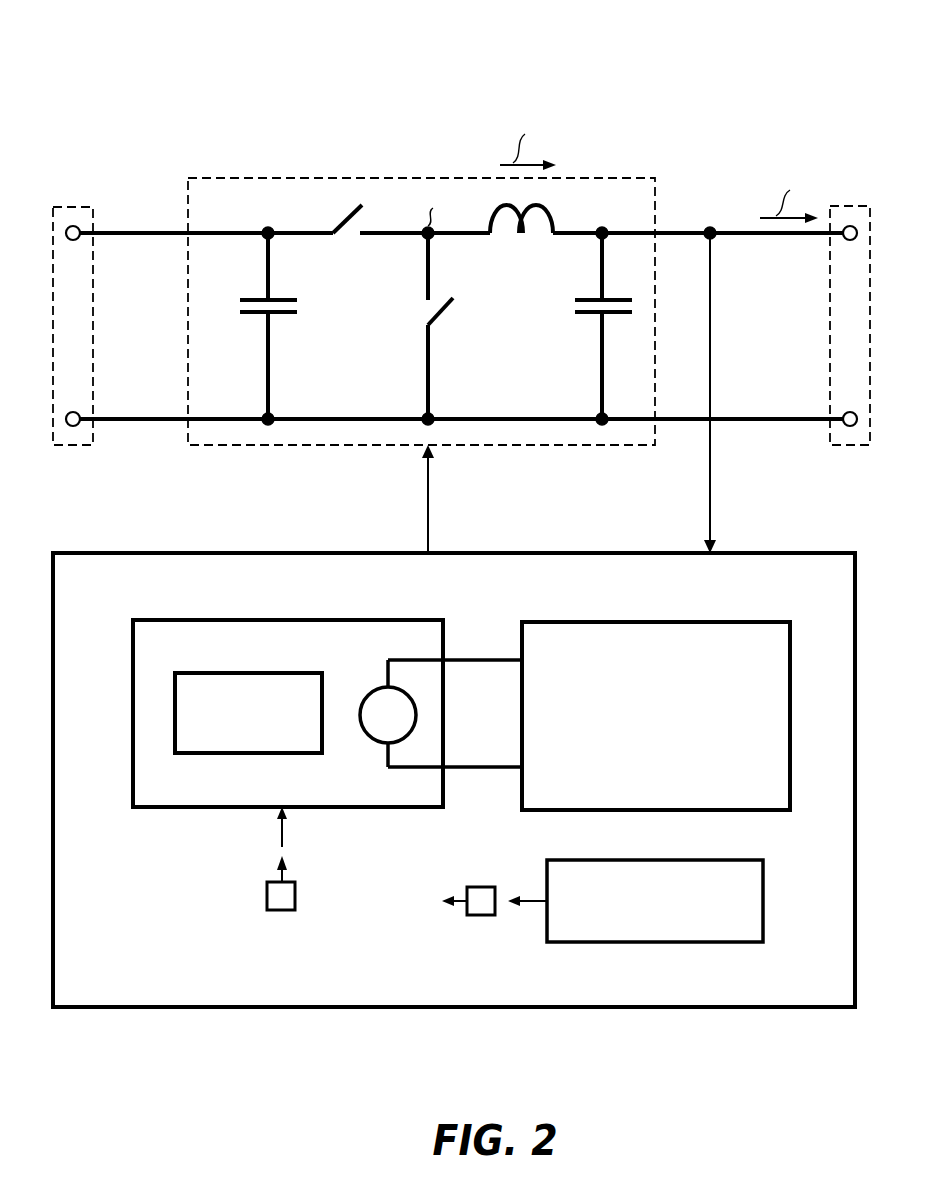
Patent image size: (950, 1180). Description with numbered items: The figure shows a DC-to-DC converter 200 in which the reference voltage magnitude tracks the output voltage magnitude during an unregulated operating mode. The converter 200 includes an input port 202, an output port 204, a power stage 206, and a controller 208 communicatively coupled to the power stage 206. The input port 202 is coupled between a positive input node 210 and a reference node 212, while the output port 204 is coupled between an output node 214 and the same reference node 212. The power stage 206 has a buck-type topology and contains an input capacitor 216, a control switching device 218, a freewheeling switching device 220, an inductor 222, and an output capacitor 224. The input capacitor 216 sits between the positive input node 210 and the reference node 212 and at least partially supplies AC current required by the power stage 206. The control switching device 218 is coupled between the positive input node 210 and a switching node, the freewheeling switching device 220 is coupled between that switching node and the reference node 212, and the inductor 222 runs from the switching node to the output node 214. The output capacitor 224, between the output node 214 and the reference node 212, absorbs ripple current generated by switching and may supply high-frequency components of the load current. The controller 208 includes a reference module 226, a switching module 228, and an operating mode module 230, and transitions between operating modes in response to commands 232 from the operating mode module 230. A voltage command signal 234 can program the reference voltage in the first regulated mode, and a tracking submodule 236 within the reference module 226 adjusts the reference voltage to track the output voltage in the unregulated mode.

The DC-to-DC converter 200 is at (863, 76).
The input port 202 is at (78, 206).
The output port 204 is at (852, 205).
The power stage 206 is at (578, 177).
The controller 208 is at (797, 552).
The positive input node 210 is at (268, 226).
The reference node 212 is at (268, 426).
The output node 214 is at (602, 226).
The input capacitor 216 is at (245, 322).
The control switching device 218 is at (351, 243).
The freewheeling switching device 220 is at (424, 308).
The inductor 222 is at (523, 250).
The output capacitor 224 is at (581, 325).
The reference module 226 is at (157, 619).
The switching module 228 is at (757, 621).
The operating mode module 230 is at (660, 943).
The commands 232 is at (484, 886).
The voltage command signal 234 is at (296, 896).
The tracking submodule 236 is at (248, 672).